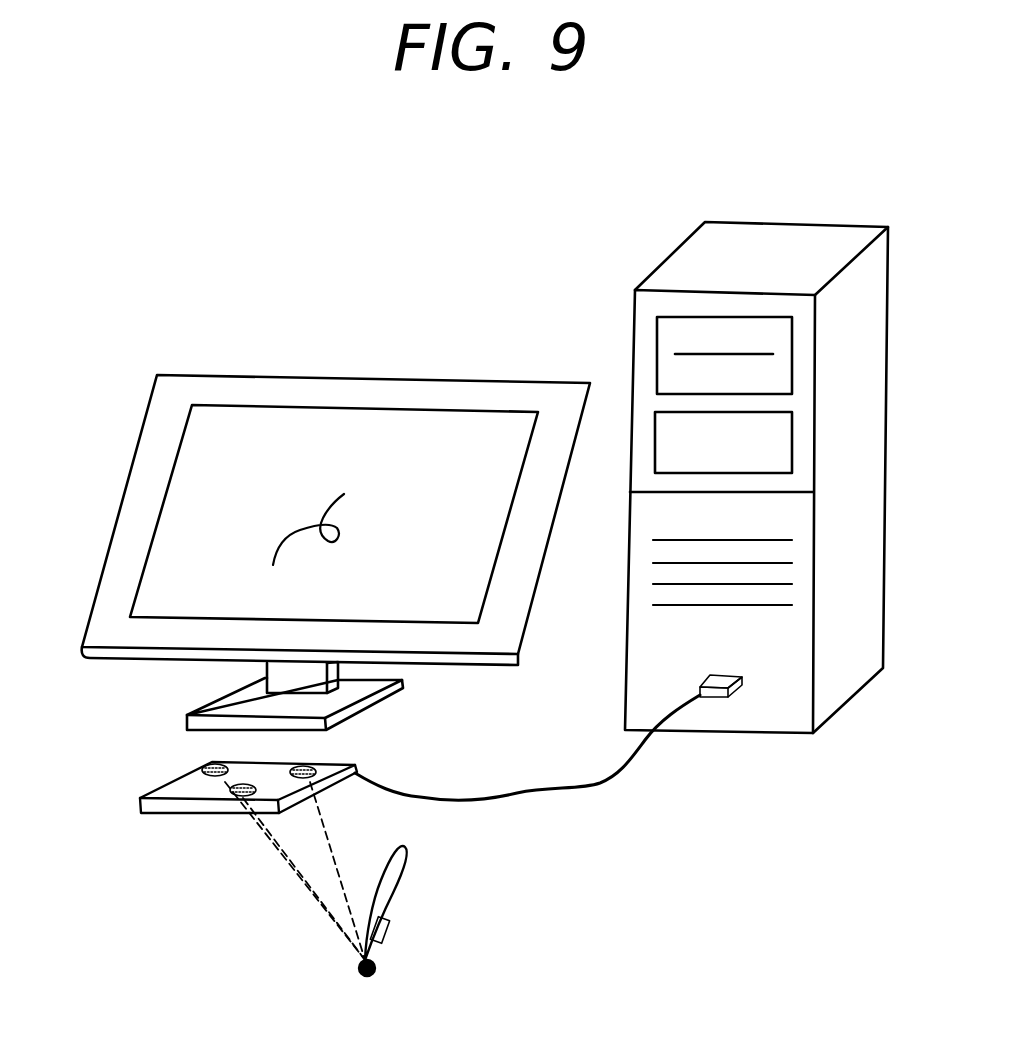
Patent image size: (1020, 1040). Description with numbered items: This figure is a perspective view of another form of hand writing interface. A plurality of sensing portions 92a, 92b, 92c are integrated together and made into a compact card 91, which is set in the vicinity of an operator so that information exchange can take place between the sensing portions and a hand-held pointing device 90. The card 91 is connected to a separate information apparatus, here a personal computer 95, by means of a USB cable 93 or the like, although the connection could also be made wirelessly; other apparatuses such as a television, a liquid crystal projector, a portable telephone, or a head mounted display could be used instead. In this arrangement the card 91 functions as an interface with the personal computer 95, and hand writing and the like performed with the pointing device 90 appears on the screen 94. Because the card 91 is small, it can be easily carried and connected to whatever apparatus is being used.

The pointing device 90 is at (405, 900).
The card 91 is at (140, 805).
The sensing portion 92a is at (212, 766).
The sensing portion 92b is at (230, 795).
The sensing portion 92c is at (318, 760).
The USB cable 93 is at (623, 770).
The screen 94 is at (340, 430).
The personal computer 95 is at (785, 230).